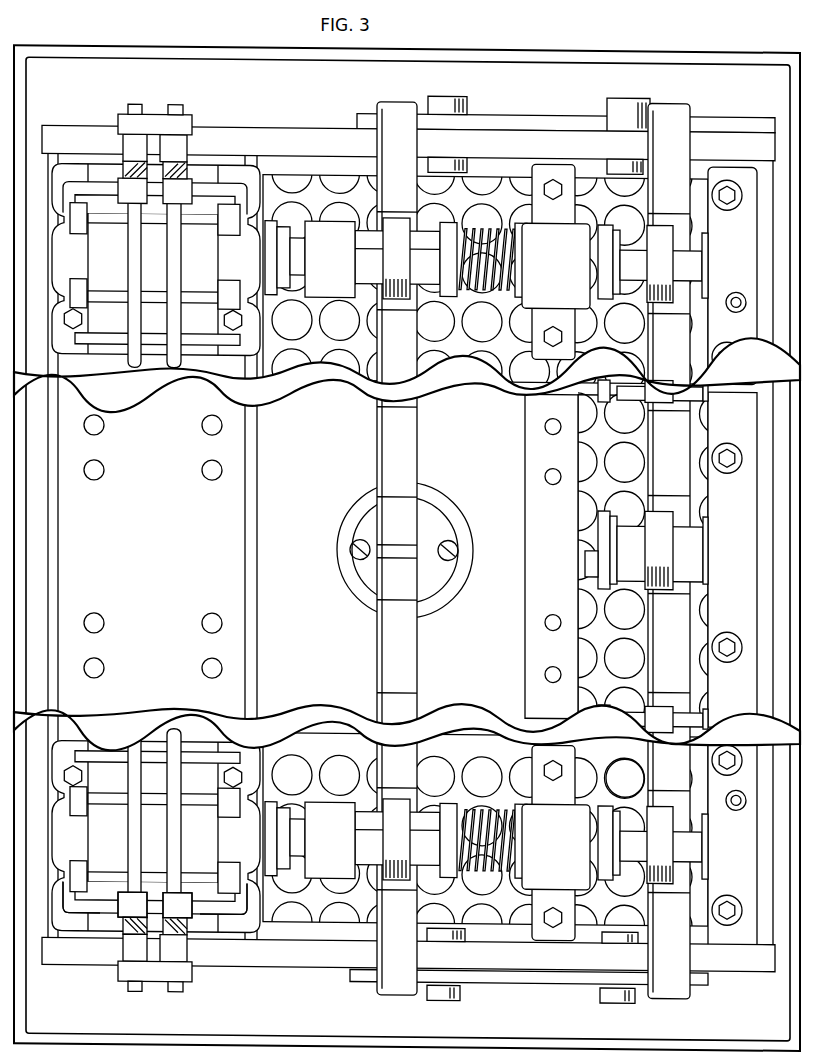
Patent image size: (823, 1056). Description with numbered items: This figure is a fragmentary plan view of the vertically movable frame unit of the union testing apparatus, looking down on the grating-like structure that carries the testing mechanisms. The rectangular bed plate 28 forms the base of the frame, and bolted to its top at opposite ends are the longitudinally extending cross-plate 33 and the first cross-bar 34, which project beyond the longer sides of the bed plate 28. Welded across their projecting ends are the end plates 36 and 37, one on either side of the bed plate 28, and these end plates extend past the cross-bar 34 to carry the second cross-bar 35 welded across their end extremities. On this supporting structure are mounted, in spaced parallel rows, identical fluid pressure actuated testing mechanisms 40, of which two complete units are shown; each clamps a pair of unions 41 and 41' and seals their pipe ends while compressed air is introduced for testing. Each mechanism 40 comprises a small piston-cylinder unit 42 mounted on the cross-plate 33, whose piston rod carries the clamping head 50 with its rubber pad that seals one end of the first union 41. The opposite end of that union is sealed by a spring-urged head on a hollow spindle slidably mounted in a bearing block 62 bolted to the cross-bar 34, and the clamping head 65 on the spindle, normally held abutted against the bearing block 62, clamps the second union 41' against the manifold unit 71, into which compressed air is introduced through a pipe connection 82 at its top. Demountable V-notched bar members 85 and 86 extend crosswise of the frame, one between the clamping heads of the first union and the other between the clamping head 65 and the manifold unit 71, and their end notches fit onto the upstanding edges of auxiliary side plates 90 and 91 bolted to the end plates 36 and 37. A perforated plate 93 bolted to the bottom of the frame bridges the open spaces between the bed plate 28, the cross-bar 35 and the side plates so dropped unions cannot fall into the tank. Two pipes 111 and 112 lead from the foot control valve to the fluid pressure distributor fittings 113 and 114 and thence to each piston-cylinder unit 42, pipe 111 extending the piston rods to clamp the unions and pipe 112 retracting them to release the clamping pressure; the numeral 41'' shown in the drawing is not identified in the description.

The bed plate 28 is at (388, 576).
The cross-plate 33 is at (242, 160).
The cross-bar 34 is at (530, 160).
The second cross-bar 35 is at (730, 161).
The end plate 36 is at (278, 962).
The end plate 37 is at (318, 125).
The fluid pressure actuated testing mechanism 40 is at (321, 795).
The union 41 is at (396, 549).
The union 41' is at (658, 554).
The guide block 41'' is at (646, 556).
The piston-cylinder unit 42 is at (156, 548).
The clamping head 50 is at (330, 840).
The bearing block 62 is at (556, 843).
The clamping head 65 is at (602, 800).
The manifold unit 71 is at (732, 844).
The pipe connection 82 is at (736, 285).
The bar member 85 is at (398, 100).
The bar member 86 is at (675, 104).
The auxiliary side plate 90 is at (516, 978).
The auxiliary side plate 91 is at (560, 112).
The perforated plate 93 is at (290, 197).
The pipe 111 is at (100, 907).
The pipe 112 is at (180, 917).
The fluid pressure distributor fitting 113 is at (120, 917).
The fluid pressure distributor fitting 114 is at (205, 905).